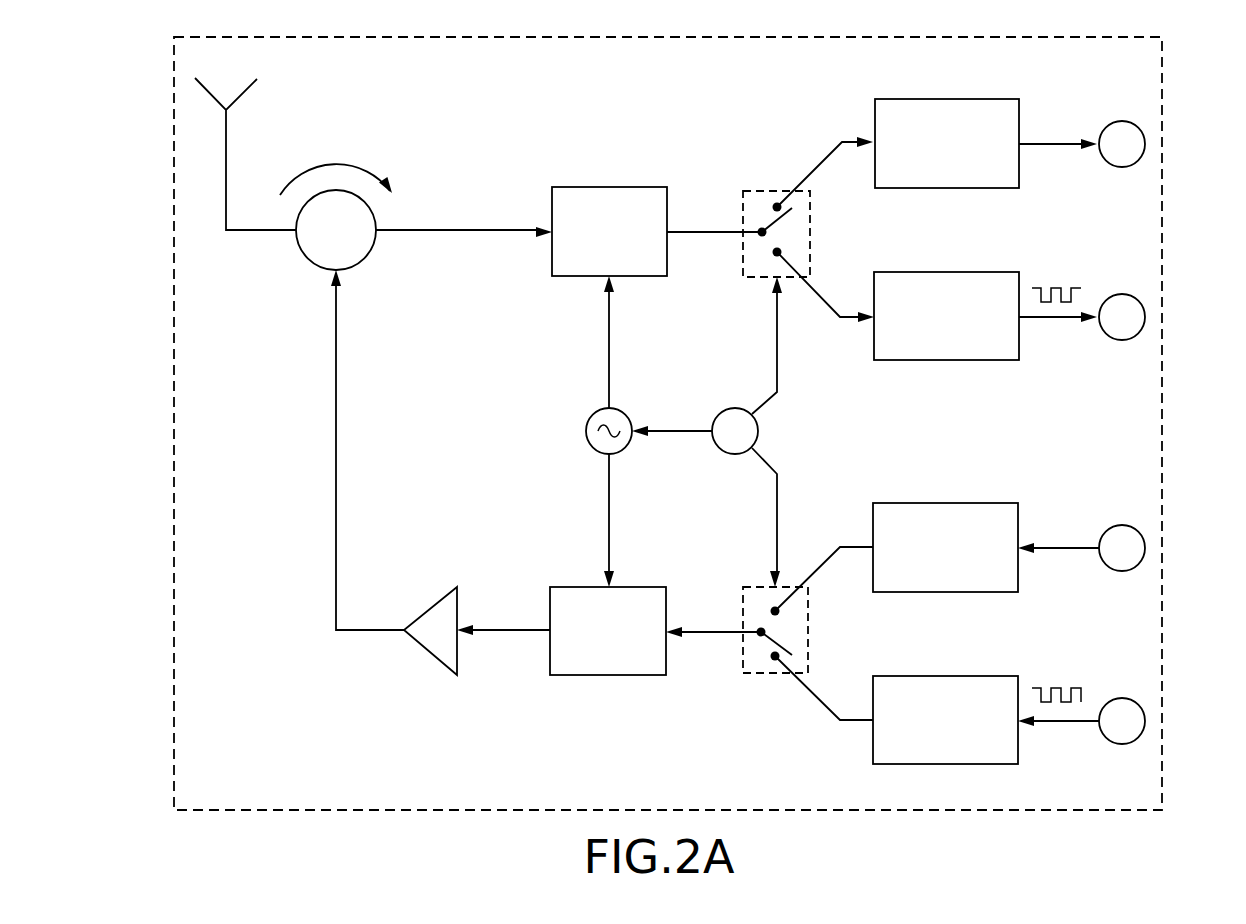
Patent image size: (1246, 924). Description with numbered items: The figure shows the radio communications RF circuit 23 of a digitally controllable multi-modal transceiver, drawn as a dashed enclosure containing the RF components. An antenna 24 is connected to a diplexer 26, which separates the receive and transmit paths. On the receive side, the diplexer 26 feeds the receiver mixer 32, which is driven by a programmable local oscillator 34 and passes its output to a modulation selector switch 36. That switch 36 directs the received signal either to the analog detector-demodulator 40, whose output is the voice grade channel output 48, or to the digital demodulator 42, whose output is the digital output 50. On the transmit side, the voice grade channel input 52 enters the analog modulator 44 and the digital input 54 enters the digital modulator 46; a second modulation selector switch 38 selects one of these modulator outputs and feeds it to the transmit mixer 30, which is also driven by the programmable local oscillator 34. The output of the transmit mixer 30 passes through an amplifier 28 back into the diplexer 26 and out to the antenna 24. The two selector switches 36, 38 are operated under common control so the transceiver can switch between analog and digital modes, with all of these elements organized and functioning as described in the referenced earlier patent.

The radio communications RF circuit 23 is at (1162, 222).
The antenna 24 is at (243, 92).
The diplexer 26 is at (366, 258).
The amplifier 28 is at (435, 600).
The transmit mixer 30 is at (635, 587).
The receiver mixer 32 is at (610, 187).
The programmable local oscillator 34 is at (590, 415).
The modulation selector switch 36 is at (753, 277).
The modulation selector switch 38 is at (777, 362).
The analog detector-demodulator 40 is at (953, 99).
The digital demodulator 42 is at (934, 272).
The analog modulator 44 is at (943, 503).
The digital modulator 46 is at (937, 676).
The voice grade channel output 48 is at (1050, 146).
The digital output 50 is at (1050, 319).
The voice grade channel input 52 is at (1065, 550).
The digital input 54 is at (1065, 723).